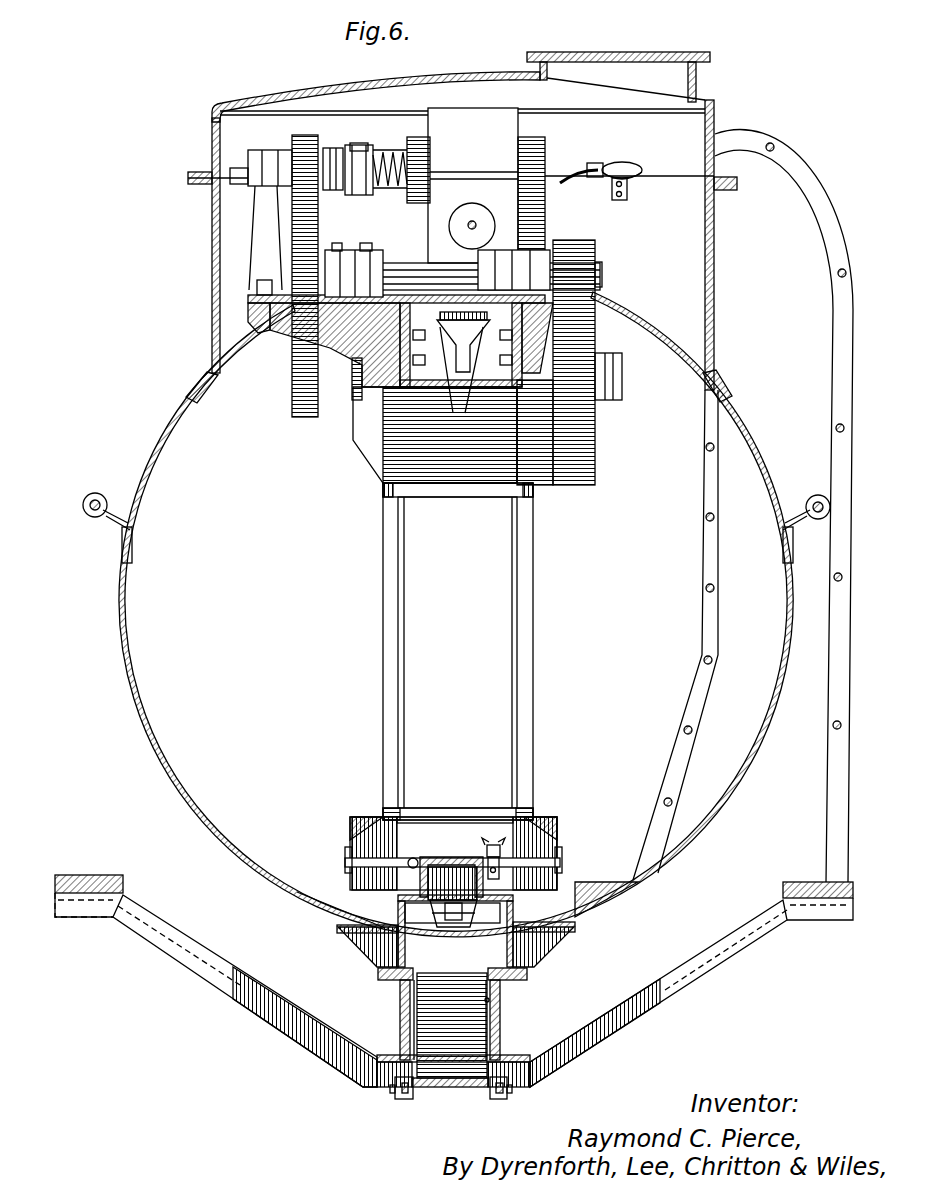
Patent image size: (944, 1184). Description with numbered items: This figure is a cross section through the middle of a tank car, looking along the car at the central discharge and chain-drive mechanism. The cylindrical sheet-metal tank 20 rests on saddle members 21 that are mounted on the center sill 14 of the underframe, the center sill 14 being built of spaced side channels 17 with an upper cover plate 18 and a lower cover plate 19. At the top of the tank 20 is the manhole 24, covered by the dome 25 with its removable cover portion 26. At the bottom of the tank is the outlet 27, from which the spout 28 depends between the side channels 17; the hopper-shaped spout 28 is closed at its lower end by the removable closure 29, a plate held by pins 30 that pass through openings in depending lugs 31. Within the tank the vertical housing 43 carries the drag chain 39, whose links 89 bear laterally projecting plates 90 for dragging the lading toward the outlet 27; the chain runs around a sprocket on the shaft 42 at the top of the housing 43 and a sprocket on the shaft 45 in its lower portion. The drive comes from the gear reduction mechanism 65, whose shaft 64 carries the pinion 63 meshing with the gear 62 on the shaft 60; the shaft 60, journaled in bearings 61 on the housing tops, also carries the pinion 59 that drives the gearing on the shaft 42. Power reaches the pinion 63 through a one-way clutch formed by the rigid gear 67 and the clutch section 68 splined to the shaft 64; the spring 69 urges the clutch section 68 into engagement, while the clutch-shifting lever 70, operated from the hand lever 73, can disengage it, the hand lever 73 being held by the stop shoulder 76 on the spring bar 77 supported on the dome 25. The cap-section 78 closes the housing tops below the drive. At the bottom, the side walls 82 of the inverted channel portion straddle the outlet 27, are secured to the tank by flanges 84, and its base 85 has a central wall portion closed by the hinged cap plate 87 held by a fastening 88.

The center sill 14 is at (399, 1028).
The side channels 17 is at (398, 999).
The upper cover plate 18 is at (380, 973).
The lower cover plate 19 is at (356, 1081).
The tank 20 is at (120, 660).
The saddle members 21 is at (378, 952).
The manhole 24 is at (233, 353).
The dome 25 is at (212, 256).
The removable cover portion 26 is at (232, 100).
The outlet 27 is at (458, 920).
The spout 28 is at (420, 1025).
The removable closure 29 is at (455, 1087).
The pins 30 is at (407, 1099).
The depending lugs 31 is at (395, 1089).
The endless drag chain 39 is at (455, 315).
The shaft 42 is at (353, 385).
The vertical housing 43 is at (438, 654).
The shaft 45 is at (347, 862).
The pinion 59 is at (585, 243).
The shaft 60 is at (400, 265).
The bearings 61 is at (355, 255).
The gear 62 is at (298, 225).
The pinion 63 is at (305, 135).
The shaft 64 is at (420, 165).
The gear reduction mechanism 65 is at (478, 108).
The rigid gear 67 is at (333, 148).
The clutch section 68 is at (358, 150).
The spring 69 is at (398, 178).
The clutch-shifting lever 70 is at (358, 160).
The hand lever 73 is at (567, 170).
The stop shoulder 76 is at (603, 165).
The spring bar 77 is at (548, 243).
The cap-section 78 is at (462, 213).
The side walls 82 is at (365, 910).
The flanges 84 is at (340, 929).
The base 85 is at (510, 893).
The cap plate 87 is at (440, 858).
The fastening 88 is at (488, 853).
The links 89 is at (433, 424).
The plates 90 is at (435, 332).